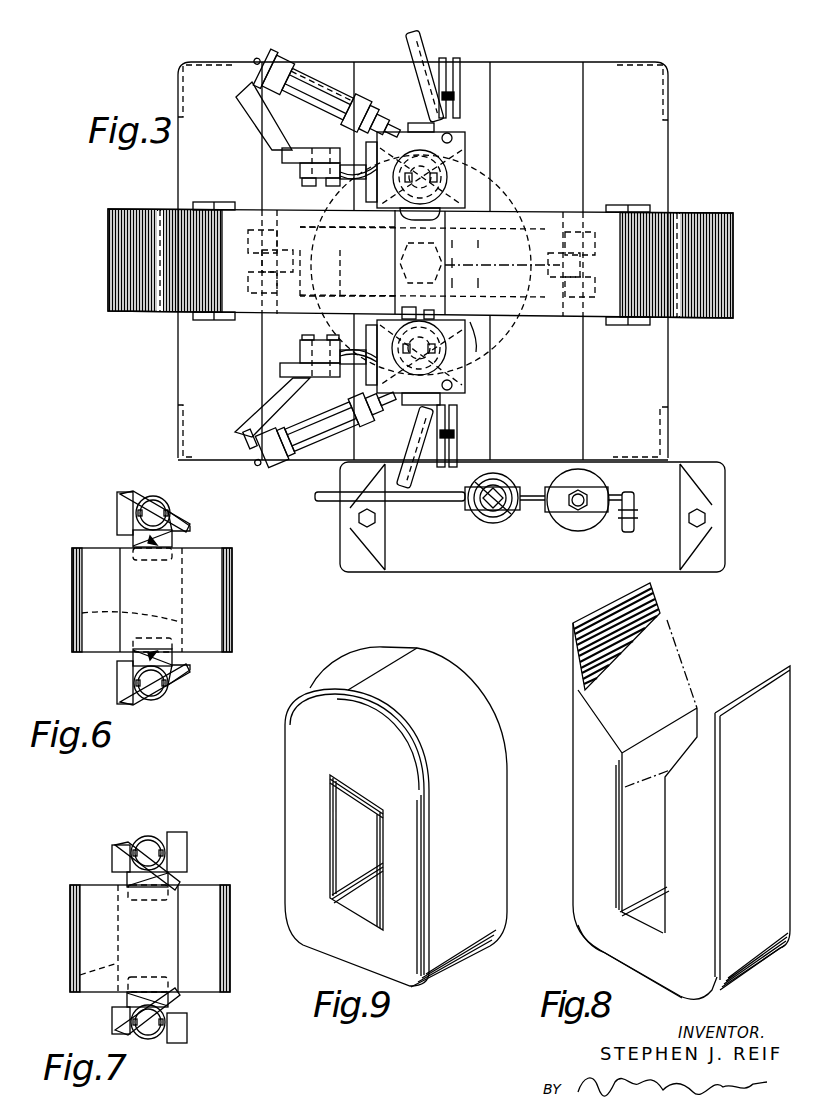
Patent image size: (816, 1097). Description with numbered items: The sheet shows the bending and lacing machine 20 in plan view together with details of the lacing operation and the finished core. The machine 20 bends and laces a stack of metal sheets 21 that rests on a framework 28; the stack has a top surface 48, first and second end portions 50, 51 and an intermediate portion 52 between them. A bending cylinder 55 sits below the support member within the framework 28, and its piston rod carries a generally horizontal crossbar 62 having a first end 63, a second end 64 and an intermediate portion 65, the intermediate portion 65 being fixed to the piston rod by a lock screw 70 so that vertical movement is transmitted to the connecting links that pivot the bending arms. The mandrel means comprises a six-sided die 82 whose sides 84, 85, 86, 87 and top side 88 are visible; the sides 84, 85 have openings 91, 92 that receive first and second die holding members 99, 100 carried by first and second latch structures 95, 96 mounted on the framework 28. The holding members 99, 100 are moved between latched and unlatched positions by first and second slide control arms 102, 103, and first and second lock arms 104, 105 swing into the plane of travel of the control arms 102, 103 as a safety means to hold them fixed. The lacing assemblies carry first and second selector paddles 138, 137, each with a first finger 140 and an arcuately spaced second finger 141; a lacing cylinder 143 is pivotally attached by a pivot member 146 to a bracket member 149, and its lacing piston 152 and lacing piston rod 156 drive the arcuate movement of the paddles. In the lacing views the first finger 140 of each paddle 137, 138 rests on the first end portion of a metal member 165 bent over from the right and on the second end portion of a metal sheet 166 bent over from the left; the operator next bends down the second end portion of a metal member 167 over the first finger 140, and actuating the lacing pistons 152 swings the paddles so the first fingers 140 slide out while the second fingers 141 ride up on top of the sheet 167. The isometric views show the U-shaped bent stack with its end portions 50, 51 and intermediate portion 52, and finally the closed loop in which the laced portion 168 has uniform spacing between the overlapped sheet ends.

In FIG. 3, the machine 20 is at (137, 347).
In FIG. 3, the stack of metal sheets 21 is at (108, 276).
In FIG. 3, the framework 28 is at (180, 438).
In FIG. 3, the top surface 48 is at (595, 312).
In FIG. 3, the first end portion 50 is at (615, 312).
In FIG. 6, the first end portion 50 is at (233, 620).
In FIG. 8, the first end portion 50 is at (783, 668).
In FIG. 3, the second end portion 51 is at (243, 308).
In FIG. 6, the second end portion 51 is at (72, 632).
In FIG. 8, the second end portion 51 is at (572, 643).
In FIG. 3, the intermediate portion 52 is at (450, 290).
In FIG. 8, the intermediate portion 52 is at (648, 967).
In FIG. 3, the bending cylinder 55 is at (488, 352).
In FIG. 3, the crossbar 62 is at (533, 318).
In FIG. 3, the first end 63 is at (554, 232).
In FIG. 3, the second end 64 is at (254, 228).
In FIG. 7, the intermediate portion 65 is at (73, 975).
In FIG. 3, the lock screw 70 is at (445, 250).
In FIG. 3, the die 82 is at (400, 238).
In FIG. 3, the side of die 84 is at (447, 218).
In FIG. 3, the side of die 85 is at (478, 318).
In FIG. 3, the side of die 86 is at (450, 282).
In FIG. 3, the side of die 87 is at (390, 276).
In FIG. 3, the top side of die 88 is at (450, 265).
In FIG. 3, the opening 91 is at (380, 225).
In FIG. 3, the opening 92 is at (395, 301).
In FIG. 3, the first latch structure 95 is at (392, 120).
In FIG. 3, the second latch structure 96 is at (383, 405).
In FIG. 3, the first die holding member 99 is at (410, 120).
In FIG. 6, the first die holding member 99 is at (123, 543).
In FIG. 3, the second die holding member 100 is at (417, 405).
In FIG. 6, the second die holding member 100 is at (172, 660).
In FIG. 3, the first slide control arm 102 is at (408, 38).
In FIG. 3, the second slide control arm 103 is at (408, 492).
In FIG. 3, the first lock arm 104 is at (450, 78).
In FIG. 3, the second lock arm 105 is at (450, 438).
In FIG. 6, the second selector paddle 137 is at (133, 493).
In FIG. 7, the second selector paddle 137 is at (120, 850).
In FIG. 6, the first selector paddle 138 is at (117, 687).
In FIG. 7, the first selector paddle 138 is at (177, 1037).
In FIG. 6, the first finger 140 is at (173, 538).
In FIG. 7, the first finger 140 is at (183, 862).
In FIG. 6, the second finger 141 is at (125, 535).
In FIG. 7, the second finger 141 is at (163, 882).
In FIG. 3, the lacing cylinder 143 is at (310, 433).
In FIG. 3, the pivot member 146 is at (250, 466).
In FIG. 3, the bracket member 149 is at (257, 417).
In FIG. 3, the lacing piston 152 is at (335, 420).
In FIG. 3, the lacing piston rod 156 is at (345, 393).
In FIG. 6, the metal member 165 is at (132, 594).
In FIG. 6, the metal sheet 166 is at (85, 614).
In FIG. 7, the metal member 167 is at (145, 932).
In FIG. 9, the laced portion 168 is at (326, 748).